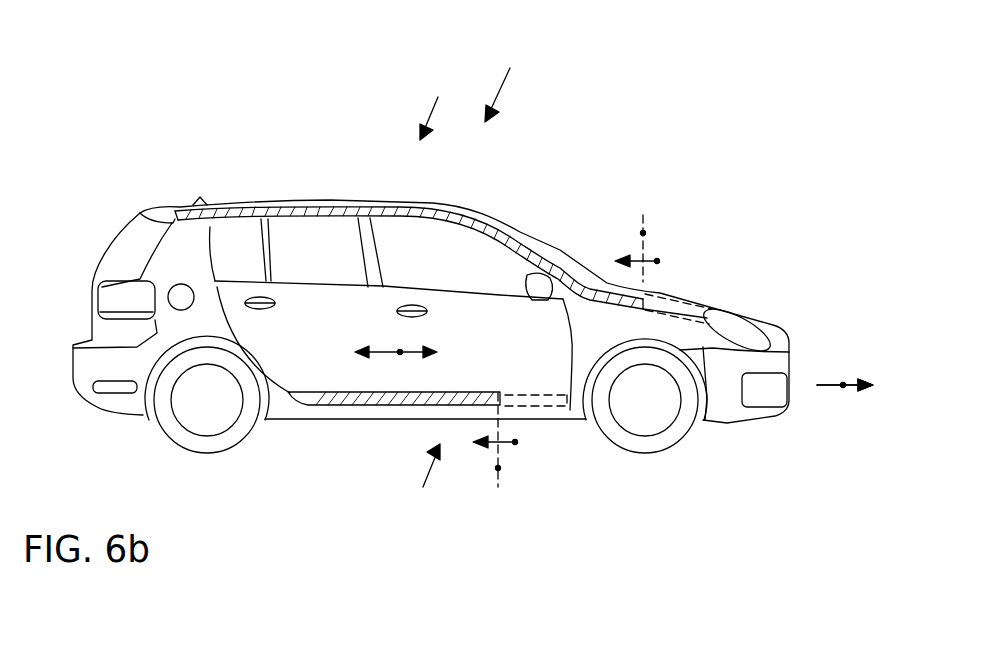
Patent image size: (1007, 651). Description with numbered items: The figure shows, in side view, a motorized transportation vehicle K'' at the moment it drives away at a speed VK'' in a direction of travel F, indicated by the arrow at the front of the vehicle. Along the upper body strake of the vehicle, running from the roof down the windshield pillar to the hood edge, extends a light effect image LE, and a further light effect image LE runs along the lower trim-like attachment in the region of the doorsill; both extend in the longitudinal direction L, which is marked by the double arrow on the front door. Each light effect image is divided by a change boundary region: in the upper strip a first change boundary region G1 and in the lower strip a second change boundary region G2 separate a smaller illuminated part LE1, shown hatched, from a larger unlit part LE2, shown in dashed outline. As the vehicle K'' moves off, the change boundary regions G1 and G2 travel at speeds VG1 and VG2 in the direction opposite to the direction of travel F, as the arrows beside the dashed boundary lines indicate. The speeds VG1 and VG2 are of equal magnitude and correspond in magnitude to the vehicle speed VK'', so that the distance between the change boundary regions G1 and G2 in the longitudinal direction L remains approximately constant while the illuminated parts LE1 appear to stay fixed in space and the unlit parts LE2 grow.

The light effect image LE is at (431, 293).
The motorized transportation vehicle K'' is at (506, 80).
The illuminated part LE1 is at (515, 245).
The unlit part LE2 is at (683, 305).
The longitudinal direction L is at (400, 354).
The first change boundary region G1 is at (645, 232).
The second change boundary region G2 is at (500, 469).
The speed of first change boundary region VG1 is at (659, 260).
The speed of second change boundary region VG2 is at (517, 443).
The direction of travel F is at (842, 388).
The vehicle speed VK'' is at (845, 419).